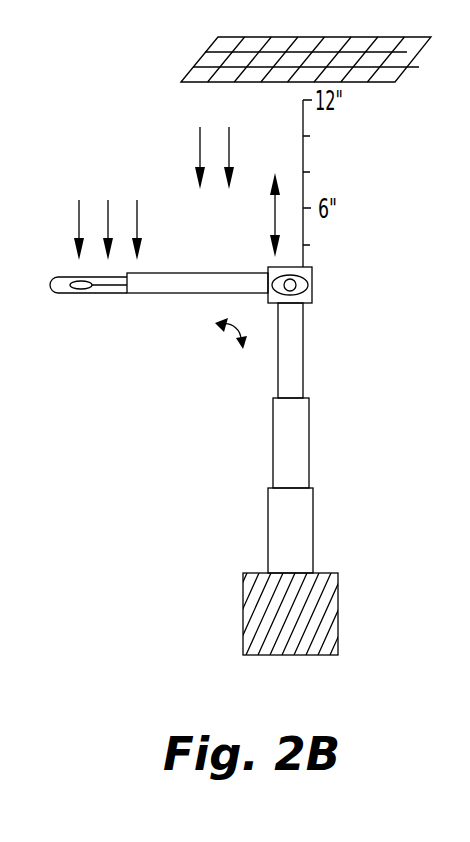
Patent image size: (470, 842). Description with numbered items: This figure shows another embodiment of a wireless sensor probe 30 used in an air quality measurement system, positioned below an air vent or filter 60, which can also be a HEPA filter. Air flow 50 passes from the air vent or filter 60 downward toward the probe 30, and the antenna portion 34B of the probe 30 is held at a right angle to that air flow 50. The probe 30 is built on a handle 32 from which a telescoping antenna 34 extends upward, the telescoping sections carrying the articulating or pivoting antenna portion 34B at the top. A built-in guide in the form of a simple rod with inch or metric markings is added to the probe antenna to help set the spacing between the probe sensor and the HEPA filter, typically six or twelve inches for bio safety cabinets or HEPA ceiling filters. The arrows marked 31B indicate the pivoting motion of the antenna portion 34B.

The air vent or filter 60 is at (190, 69).
The air flow 50 is at (132, 176).
The antenna portion 34B is at (225, 272).
The rotation direction 31B is at (219, 352).
The probe 30 is at (328, 436).
The telescoping antenna 34 is at (304, 517).
The handle 32 is at (328, 623).